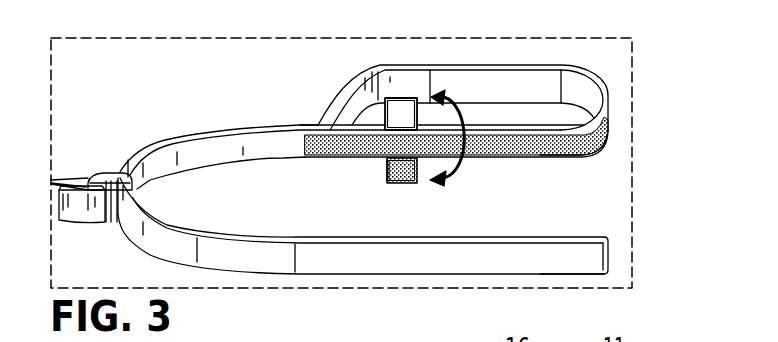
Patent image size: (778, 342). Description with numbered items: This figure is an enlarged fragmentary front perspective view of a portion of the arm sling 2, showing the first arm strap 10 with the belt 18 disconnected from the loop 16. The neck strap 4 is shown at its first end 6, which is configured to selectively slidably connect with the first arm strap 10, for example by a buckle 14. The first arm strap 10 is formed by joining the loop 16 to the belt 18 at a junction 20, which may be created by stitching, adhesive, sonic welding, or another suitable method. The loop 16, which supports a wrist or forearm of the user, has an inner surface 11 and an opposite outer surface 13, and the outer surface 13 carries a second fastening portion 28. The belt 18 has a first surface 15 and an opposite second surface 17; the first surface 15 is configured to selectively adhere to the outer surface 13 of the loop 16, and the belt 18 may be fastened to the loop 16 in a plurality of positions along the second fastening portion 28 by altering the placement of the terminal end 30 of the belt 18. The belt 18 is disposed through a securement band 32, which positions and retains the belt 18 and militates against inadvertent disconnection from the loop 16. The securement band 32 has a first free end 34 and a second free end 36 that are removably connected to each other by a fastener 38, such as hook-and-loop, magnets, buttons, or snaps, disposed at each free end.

The arm sling 2 is at (92, 160).
The neck strap 4 is at (83, 215).
The first end 6 is at (80, 165).
The first arm strap 10 is at (225, 116).
The inner surface 11 is at (509, 80).
The outer surface 13 is at (579, 162).
The buckle 14 is at (107, 177).
The first surface 15 is at (200, 183).
The loop 16 is at (443, 80).
The second surface 17 is at (580, 274).
The belt 18 is at (276, 248).
The junction 20 is at (297, 116).
The second fastening portion 28 is at (518, 147).
The terminal end 30 is at (622, 245).
The securement band 32 is at (397, 193).
The first free end 34 is at (412, 180).
The second free end 36 is at (403, 107).
The fastener 38 is at (376, 170).